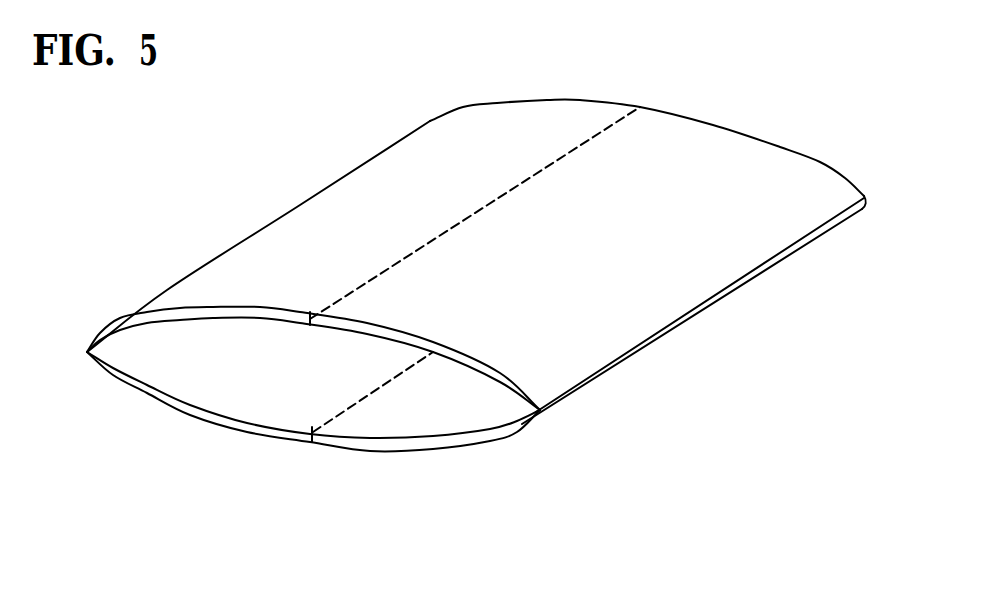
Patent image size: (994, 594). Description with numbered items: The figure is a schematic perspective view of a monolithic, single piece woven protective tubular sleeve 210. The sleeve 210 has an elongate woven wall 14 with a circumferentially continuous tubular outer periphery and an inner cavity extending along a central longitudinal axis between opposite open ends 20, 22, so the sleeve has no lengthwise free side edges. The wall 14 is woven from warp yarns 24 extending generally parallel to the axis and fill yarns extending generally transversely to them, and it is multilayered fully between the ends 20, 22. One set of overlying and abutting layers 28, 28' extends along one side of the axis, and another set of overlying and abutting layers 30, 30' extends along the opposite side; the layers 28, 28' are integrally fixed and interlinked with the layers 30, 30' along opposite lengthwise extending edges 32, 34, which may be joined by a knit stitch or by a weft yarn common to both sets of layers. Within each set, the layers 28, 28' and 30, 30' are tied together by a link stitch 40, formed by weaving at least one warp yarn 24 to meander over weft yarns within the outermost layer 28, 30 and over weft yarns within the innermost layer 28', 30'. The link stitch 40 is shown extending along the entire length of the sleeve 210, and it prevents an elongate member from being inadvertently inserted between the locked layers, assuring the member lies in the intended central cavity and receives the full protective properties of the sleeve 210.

The sleeve 210 is at (308, 156).
The woven wall 14 is at (313, 348).
The open end 20 is at (534, 417).
The open end 22 is at (855, 184).
The warp yarns 24 is at (493, 201).
The layer 28 is at (313, 318).
The layer 28' is at (313, 364).
The layer 30 is at (313, 411).
The layer 30' is at (313, 389).
The lengthwise extending edge 32 is at (83, 352).
The lengthwise extending edge 34 is at (545, 410).
The link stitch 40 is at (369, 396).